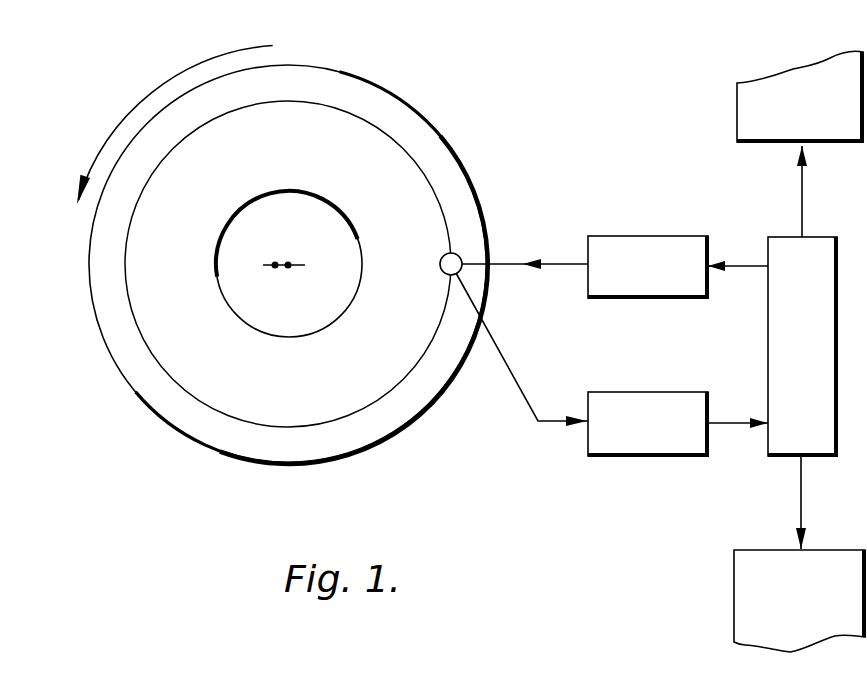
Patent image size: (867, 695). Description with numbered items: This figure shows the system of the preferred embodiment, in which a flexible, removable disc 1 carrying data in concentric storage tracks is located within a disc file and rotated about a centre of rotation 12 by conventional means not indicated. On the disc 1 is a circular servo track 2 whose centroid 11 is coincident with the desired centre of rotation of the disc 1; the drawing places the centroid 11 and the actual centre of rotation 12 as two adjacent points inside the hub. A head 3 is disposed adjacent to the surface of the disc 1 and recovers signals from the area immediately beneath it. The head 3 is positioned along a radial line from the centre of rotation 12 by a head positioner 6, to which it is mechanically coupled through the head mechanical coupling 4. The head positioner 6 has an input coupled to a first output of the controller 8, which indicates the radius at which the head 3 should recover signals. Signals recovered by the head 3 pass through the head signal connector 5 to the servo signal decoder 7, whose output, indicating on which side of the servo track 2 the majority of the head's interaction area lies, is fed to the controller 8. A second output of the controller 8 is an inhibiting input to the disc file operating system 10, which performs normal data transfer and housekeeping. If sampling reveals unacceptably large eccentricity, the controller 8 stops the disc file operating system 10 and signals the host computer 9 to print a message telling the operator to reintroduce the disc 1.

The disc 1 is at (437, 150).
The servo track 2 is at (440, 197).
The head 3 is at (462, 253).
The head mechanical coupling 4 is at (508, 266).
The head signal connector 5 is at (512, 378).
The head positioner 6 is at (643, 244).
The servo signal decoder 7 is at (656, 443).
The controller 8 is at (778, 337).
The host computer 9 is at (745, 595).
The disc file operating system 10 is at (741, 118).
The centroid of the servo track 11 is at (288, 267).
The centre of rotation 12 is at (275, 263).